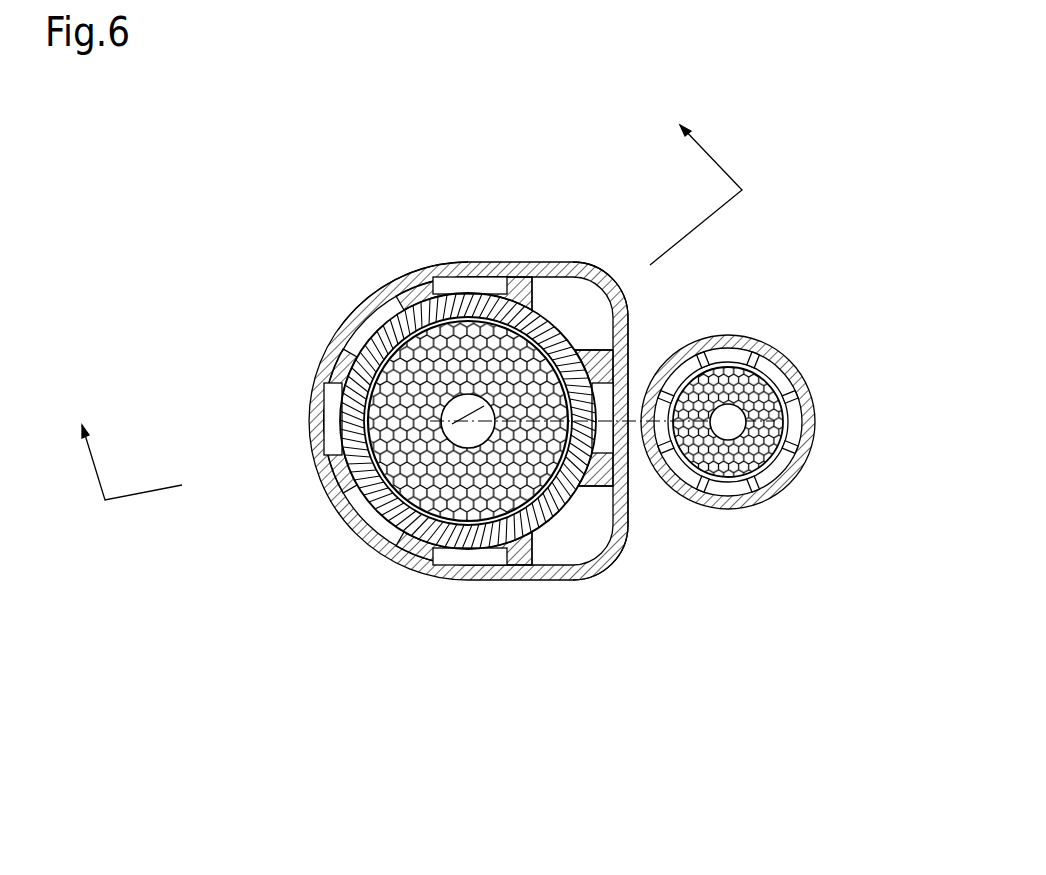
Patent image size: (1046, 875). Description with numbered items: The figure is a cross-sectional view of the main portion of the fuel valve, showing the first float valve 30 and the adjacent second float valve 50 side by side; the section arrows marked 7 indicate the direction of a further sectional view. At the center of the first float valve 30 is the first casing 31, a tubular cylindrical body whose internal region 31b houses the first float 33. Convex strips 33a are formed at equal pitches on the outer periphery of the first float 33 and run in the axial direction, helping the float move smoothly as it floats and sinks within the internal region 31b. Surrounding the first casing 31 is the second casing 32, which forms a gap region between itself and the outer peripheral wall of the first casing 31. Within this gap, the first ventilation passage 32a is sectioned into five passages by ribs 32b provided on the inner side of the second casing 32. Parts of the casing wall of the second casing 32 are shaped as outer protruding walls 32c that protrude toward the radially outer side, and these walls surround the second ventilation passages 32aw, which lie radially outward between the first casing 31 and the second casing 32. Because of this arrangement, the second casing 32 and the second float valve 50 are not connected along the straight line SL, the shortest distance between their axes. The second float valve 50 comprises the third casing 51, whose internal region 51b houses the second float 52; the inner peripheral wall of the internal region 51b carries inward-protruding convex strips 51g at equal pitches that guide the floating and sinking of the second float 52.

The section line of FIG. 7 is at (404, 294).
The first float valve 30 is at (240, 415).
The first casing 31 is at (380, 552).
The internal region 31b is at (445, 567).
The second casing 32 is at (313, 388).
The first ventilation passage 32a is at (362, 330).
The ribs 32b is at (383, 307).
The outer protruding walls 32c is at (583, 264).
The second ventilation passages 32aw is at (588, 330).
The first float 33 is at (357, 543).
The convex strips 33a is at (400, 565).
The second float valve 50 is at (832, 352).
The third casing 51 is at (764, 346).
The internal region 51b is at (805, 380).
The convex strips 51g is at (815, 430).
The second float 52 is at (720, 507).
The straight line SL is at (633, 421).